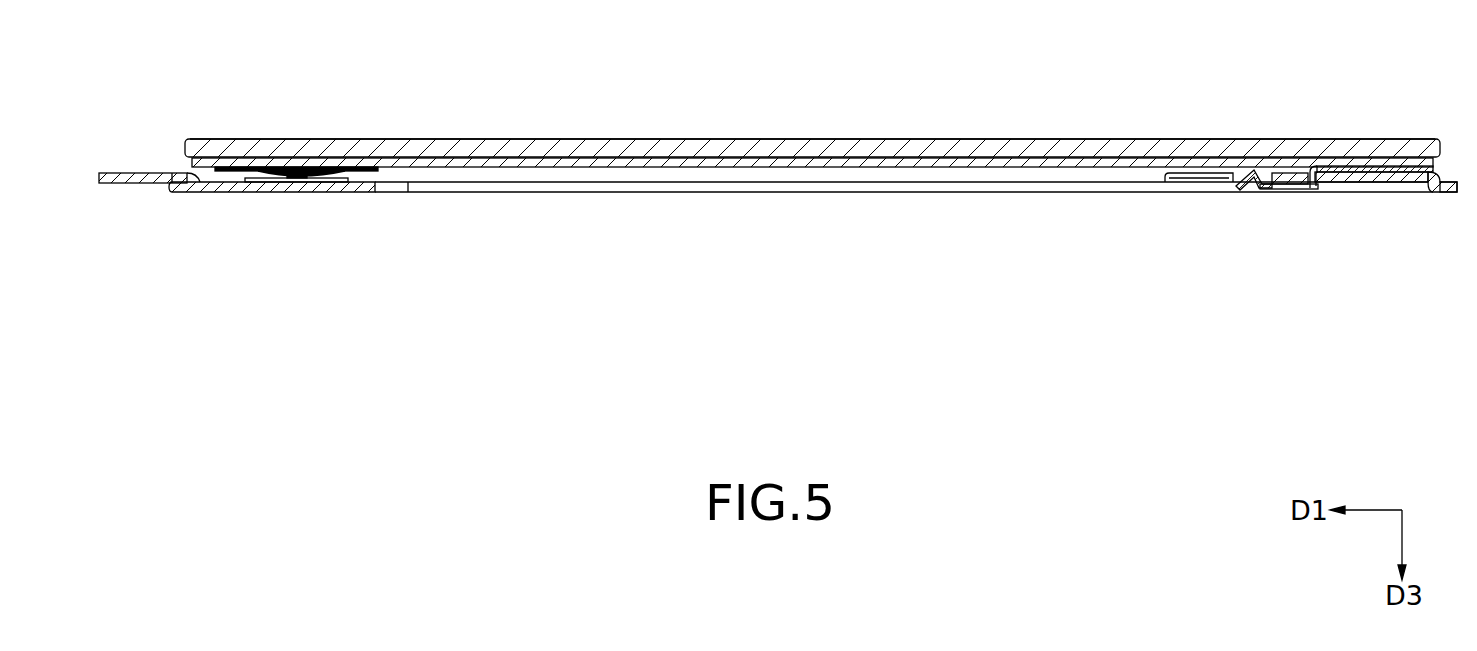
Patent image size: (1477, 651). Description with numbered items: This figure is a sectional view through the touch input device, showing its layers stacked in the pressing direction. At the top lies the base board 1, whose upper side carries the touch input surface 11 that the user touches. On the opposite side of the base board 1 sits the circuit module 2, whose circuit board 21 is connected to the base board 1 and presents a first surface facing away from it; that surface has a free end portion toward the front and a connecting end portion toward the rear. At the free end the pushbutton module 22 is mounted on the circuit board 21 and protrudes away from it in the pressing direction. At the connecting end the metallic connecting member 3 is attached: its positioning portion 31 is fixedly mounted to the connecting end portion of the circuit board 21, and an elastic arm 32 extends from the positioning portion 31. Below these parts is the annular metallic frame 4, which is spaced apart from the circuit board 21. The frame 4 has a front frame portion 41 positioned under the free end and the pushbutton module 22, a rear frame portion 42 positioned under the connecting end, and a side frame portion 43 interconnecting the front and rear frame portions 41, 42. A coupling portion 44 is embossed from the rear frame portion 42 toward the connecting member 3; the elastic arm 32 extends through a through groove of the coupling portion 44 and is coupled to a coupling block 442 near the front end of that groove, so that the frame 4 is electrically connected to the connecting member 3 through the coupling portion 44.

The base board 1 is at (601, 130).
The touch input surface 11 is at (705, 139).
The circuit module 2 is at (504, 150).
The circuit board 21 is at (378, 162).
The pushbutton module 22 is at (297, 178).
The connecting member 3 is at (1346, 191).
The positioning portion 31 is at (1366, 166).
The elastic arm 32 is at (1302, 190).
The frame 4 is at (785, 247).
The front frame portion 41 is at (262, 190).
The rear frame portion 42 is at (1445, 192).
The side frame portion 43 is at (485, 192).
The coupling portion 44 is at (1405, 182).
The coupling block 442 is at (1285, 172).